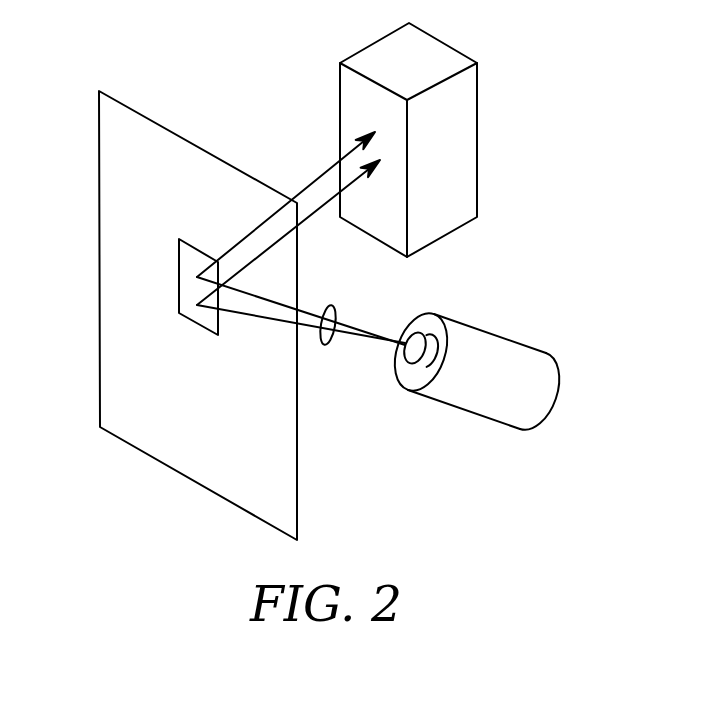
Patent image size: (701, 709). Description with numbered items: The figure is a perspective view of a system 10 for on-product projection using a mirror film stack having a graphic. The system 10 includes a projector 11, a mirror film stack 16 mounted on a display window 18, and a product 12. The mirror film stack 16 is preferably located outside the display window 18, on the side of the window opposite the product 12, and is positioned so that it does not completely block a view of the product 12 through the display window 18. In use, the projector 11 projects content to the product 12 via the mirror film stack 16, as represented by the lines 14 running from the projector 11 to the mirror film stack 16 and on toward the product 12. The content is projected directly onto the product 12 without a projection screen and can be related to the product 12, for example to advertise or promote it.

The system 10 is at (621, 180).
The projector 11 is at (520, 338).
The product 12 is at (462, 105).
The lines 14 is at (325, 345).
The mirror film stack 16 is at (190, 257).
The display window 18 is at (118, 400).